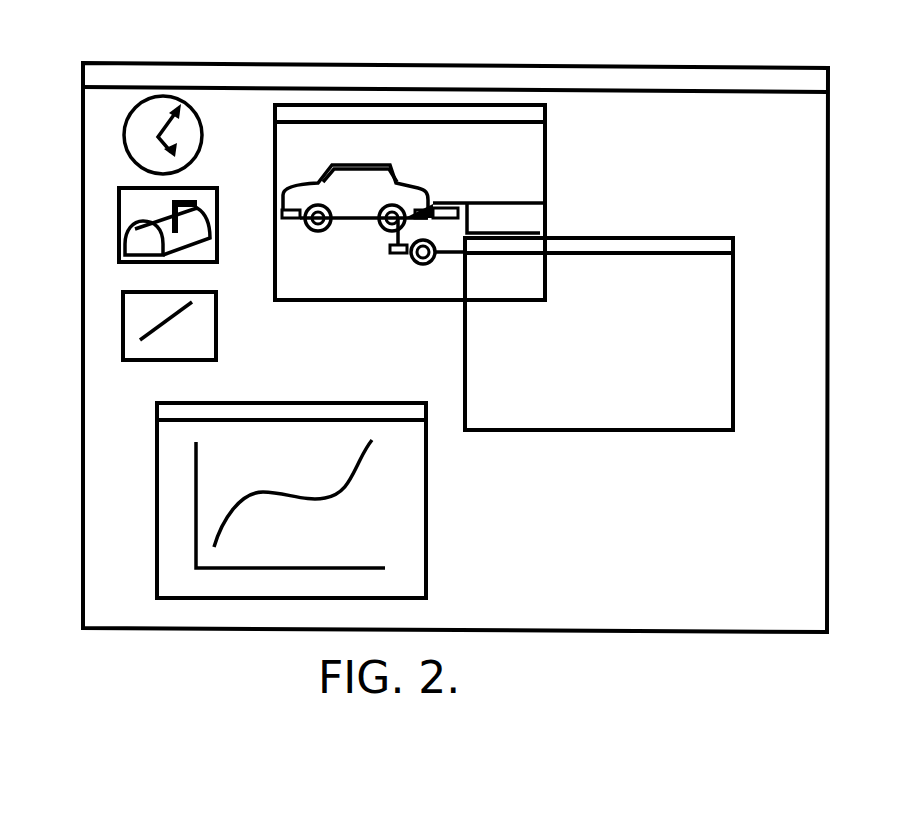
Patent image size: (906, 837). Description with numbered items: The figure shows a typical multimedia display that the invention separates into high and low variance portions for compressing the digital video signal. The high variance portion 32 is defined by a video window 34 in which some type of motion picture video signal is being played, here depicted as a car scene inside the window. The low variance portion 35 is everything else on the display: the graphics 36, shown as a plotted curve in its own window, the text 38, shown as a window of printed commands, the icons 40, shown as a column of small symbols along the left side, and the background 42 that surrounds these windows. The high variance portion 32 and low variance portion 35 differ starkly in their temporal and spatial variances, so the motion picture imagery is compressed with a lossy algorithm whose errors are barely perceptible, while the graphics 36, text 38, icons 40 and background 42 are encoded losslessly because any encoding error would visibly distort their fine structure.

The high variance portion 32 is at (487, 132).
The video window 34 is at (275, 110).
The low variance portion 35 is at (540, 591).
The graphics 36 is at (157, 597).
The text 38 is at (733, 238).
The icons 40 is at (118, 192).
The background 42 is at (668, 100).